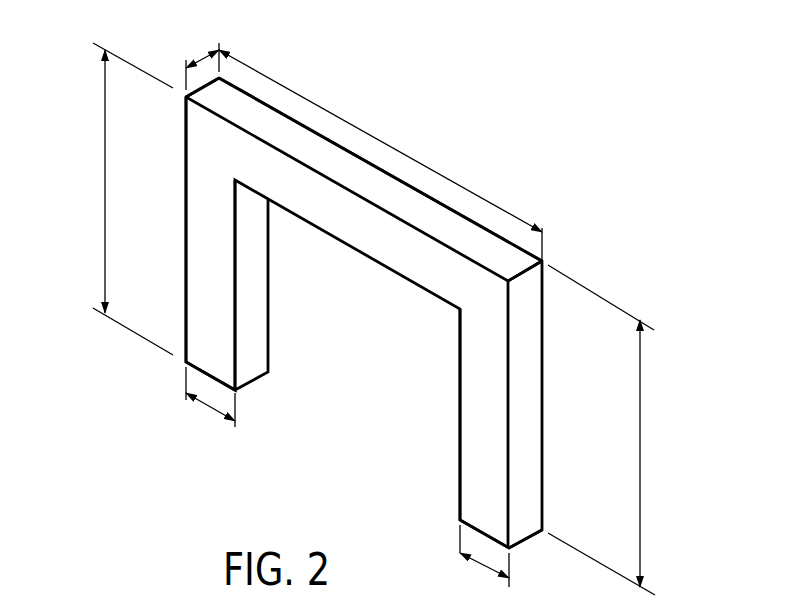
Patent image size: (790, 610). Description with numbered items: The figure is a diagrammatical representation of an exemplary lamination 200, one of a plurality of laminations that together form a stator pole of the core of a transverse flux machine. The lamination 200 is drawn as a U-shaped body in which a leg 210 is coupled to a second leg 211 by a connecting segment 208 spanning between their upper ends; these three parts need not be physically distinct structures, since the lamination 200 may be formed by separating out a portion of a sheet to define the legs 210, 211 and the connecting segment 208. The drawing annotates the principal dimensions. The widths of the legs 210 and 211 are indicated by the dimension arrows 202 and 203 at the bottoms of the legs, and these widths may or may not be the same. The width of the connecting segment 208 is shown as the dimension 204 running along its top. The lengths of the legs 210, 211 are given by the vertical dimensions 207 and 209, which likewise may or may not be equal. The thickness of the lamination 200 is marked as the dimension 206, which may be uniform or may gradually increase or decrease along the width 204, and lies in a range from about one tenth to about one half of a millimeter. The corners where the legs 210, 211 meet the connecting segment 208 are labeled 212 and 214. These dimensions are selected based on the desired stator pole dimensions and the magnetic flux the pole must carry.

The lamination 200 is at (597, 92).
The width of leg 202 is at (210, 407).
The width of leg 203 is at (500, 572).
The width of connecting segment 204 is at (380, 140).
The thickness of lamination 206 is at (198, 61).
The length of leg 207 is at (104, 183).
The connecting segment 208 is at (432, 212).
The length of leg 209 is at (641, 422).
The leg 210 is at (195, 248).
The leg 211 is at (530, 447).
The first corner 212 is at (198, 82).
The second corner 214 is at (532, 270).